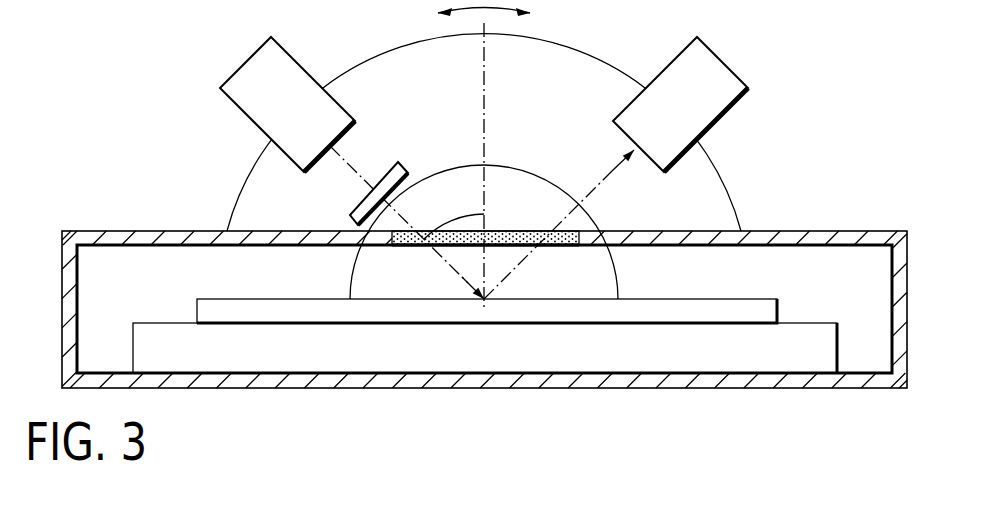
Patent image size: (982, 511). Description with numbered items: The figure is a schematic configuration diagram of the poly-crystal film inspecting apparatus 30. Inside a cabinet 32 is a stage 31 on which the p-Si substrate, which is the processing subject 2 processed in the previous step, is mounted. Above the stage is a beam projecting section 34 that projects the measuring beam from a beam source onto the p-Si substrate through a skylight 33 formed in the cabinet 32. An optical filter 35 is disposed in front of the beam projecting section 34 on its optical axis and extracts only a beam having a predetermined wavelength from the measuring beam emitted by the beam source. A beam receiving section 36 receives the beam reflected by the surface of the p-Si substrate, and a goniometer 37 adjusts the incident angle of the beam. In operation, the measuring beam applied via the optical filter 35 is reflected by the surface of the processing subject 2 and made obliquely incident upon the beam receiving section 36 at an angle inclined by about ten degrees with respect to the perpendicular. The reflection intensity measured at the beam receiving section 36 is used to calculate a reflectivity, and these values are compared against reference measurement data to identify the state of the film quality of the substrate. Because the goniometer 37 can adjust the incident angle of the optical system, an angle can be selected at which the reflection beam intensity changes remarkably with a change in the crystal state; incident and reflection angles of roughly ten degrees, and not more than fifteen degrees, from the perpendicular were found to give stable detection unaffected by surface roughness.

The processing subject 2 is at (762, 301).
The poly-crystal film inspecting apparatus 30 is at (475, 410).
The stage 31 is at (818, 331).
The cabinet 32 is at (850, 380).
The skylight 33 is at (511, 230).
The beam projecting section 34 is at (243, 110).
The optical filter 35 is at (358, 205).
The beam receiving section 36 is at (718, 61).
The goniometer 37 is at (380, 62).